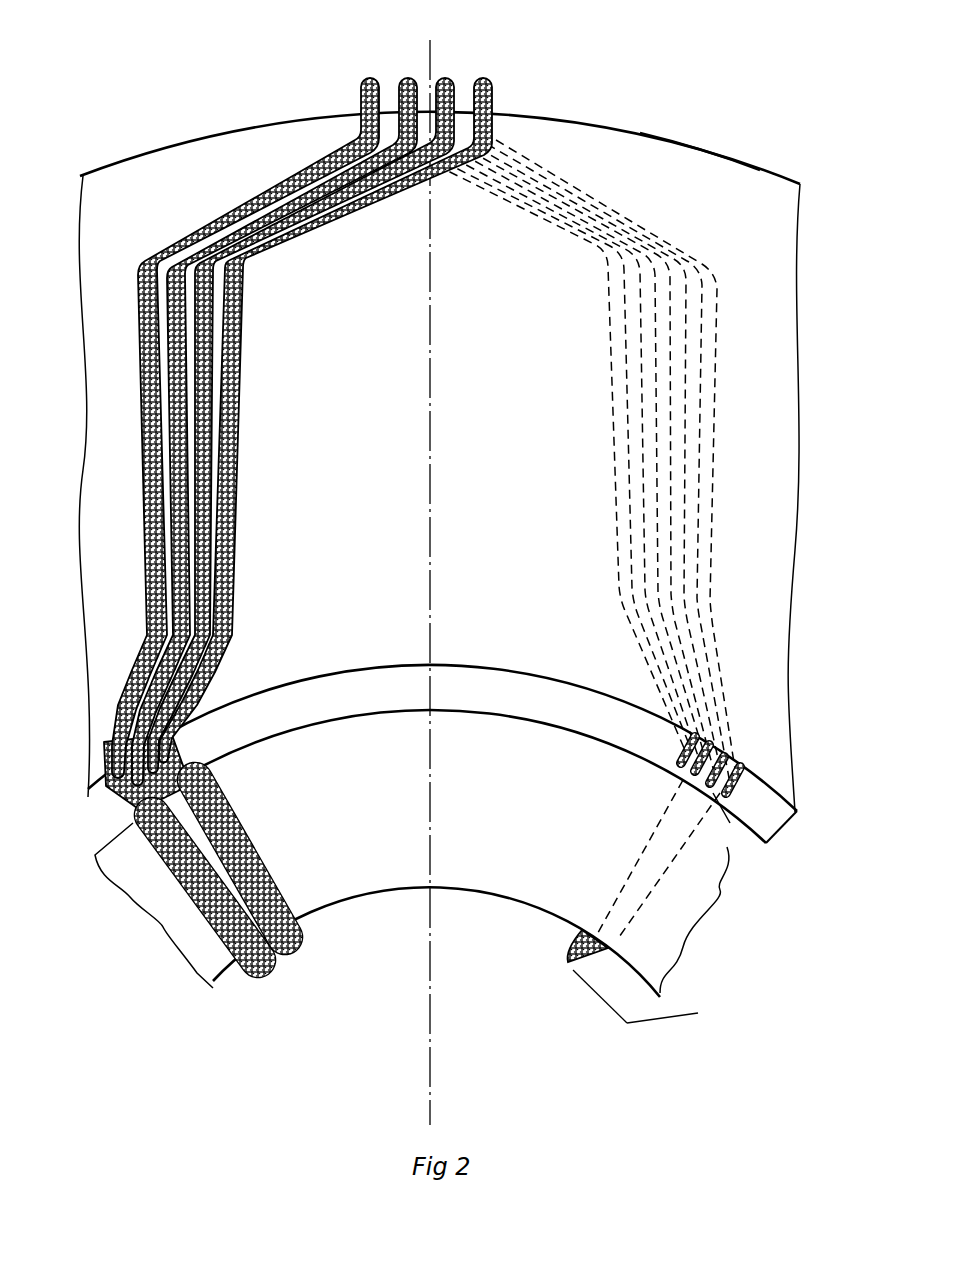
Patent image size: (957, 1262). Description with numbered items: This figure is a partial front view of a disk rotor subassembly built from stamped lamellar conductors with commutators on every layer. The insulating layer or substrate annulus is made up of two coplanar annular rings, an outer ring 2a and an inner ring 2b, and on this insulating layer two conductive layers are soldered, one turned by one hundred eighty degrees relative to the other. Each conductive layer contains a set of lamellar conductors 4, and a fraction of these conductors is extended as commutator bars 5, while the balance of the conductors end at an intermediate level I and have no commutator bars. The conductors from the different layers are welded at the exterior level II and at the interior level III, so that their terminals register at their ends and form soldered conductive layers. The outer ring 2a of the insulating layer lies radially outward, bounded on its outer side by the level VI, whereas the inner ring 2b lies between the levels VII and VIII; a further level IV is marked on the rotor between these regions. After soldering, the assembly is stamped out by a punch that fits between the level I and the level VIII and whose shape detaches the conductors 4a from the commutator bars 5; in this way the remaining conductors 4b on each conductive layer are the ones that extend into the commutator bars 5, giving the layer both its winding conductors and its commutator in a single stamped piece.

The outer ring 2a is at (760, 323).
The inner ring 2b is at (213, 950).
The lamellar conductors 4 is at (253, 432).
The conductors detached from commutator bars 4a is at (177, 317).
The conductors extending into commutator bars 4b is at (233, 401).
The commutator bars 5 is at (265, 905).
The intermediate level I is at (797, 817).
The exterior level II is at (483, 77).
The interior level III is at (770, 1018).
The level IV is at (763, 782).
The level VI is at (693, 165).
The level VII is at (643, 973).
The level VIII is at (730, 823).